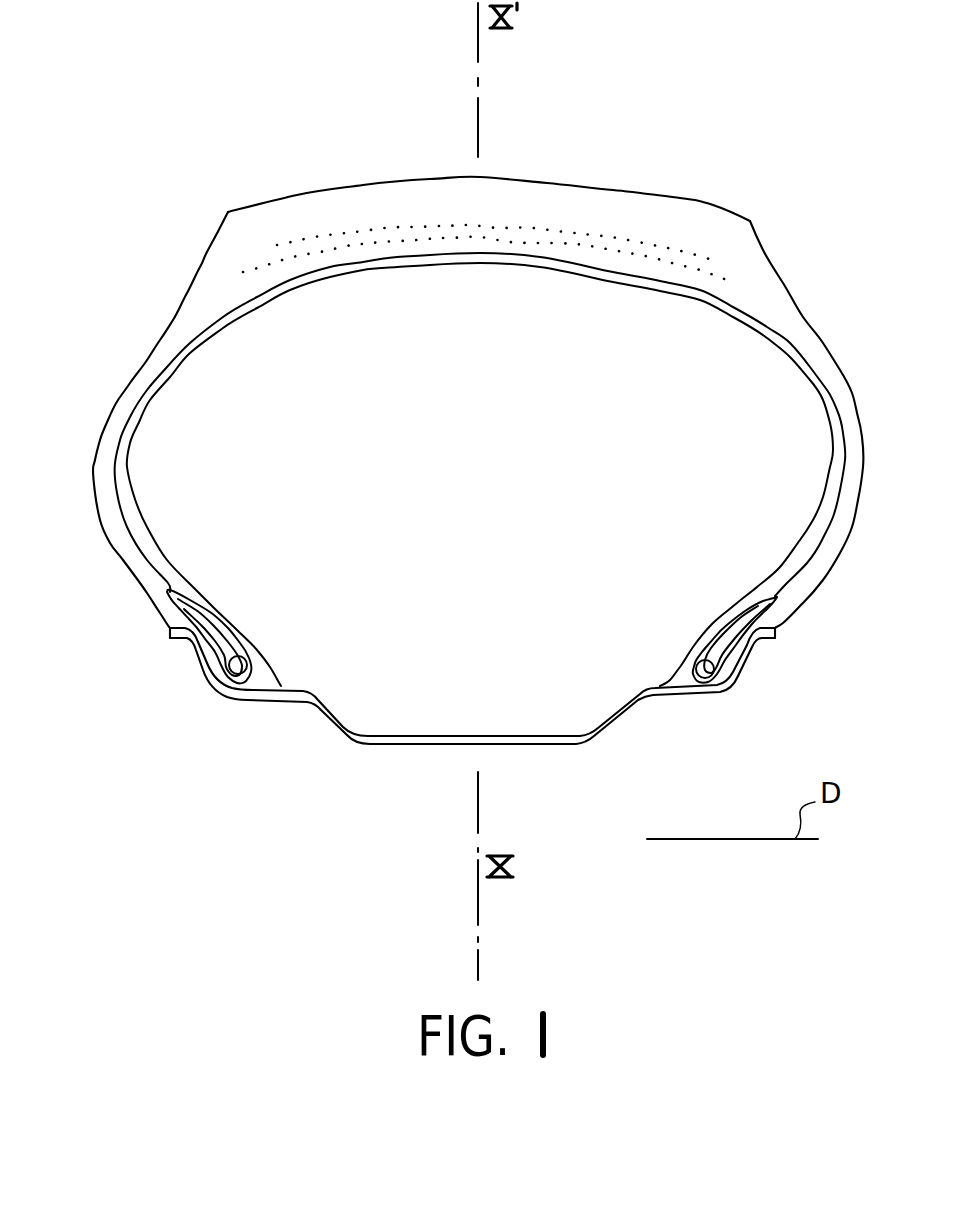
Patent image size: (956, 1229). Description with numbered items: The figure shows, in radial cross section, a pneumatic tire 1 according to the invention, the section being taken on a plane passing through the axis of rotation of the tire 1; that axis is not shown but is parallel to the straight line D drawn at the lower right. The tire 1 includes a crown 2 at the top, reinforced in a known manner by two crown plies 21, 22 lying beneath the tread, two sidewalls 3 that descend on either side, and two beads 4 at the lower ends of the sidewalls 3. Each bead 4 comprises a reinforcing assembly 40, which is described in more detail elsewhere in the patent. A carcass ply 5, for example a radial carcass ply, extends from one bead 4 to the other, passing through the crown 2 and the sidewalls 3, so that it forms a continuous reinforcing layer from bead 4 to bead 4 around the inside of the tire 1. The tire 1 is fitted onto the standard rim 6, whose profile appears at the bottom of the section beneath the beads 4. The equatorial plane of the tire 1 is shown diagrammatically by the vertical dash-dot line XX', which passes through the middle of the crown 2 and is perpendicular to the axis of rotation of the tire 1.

The pneumatic tire 1 is at (814, 259).
The crown 2 is at (707, 203).
The sidewall 3 is at (96, 440).
The bead 4 is at (250, 627).
The reinforcing assembly 40 is at (249, 656).
The carcass ply 5 is at (143, 558).
The standard rim 6 is at (475, 744).
The crown ply 21 is at (543, 242).
The crown ply 22 is at (582, 233).